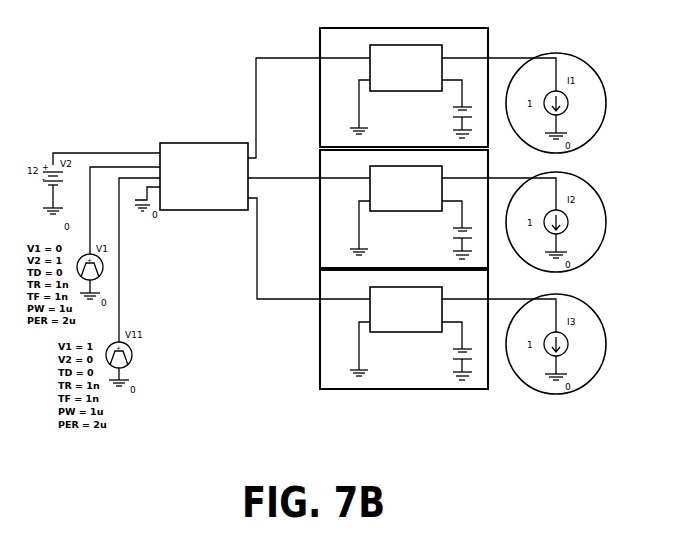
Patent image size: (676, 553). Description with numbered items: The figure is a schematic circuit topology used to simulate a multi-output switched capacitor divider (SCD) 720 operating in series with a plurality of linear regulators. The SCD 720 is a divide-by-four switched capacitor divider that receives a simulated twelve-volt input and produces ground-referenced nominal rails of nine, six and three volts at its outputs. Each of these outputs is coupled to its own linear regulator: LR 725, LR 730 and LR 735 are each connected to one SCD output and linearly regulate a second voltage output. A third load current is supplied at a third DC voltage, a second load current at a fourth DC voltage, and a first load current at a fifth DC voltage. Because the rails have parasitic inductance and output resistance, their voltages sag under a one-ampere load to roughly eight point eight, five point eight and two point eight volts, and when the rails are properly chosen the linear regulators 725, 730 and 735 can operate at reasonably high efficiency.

The multiple-output switched capacitor divider (SCD) 720 is at (224, 143).
The linear regulator (LR) 725 is at (426, 384).
The linear regulator (LR) 730 is at (426, 263).
The linear regulator (LR) 735 is at (426, 142).